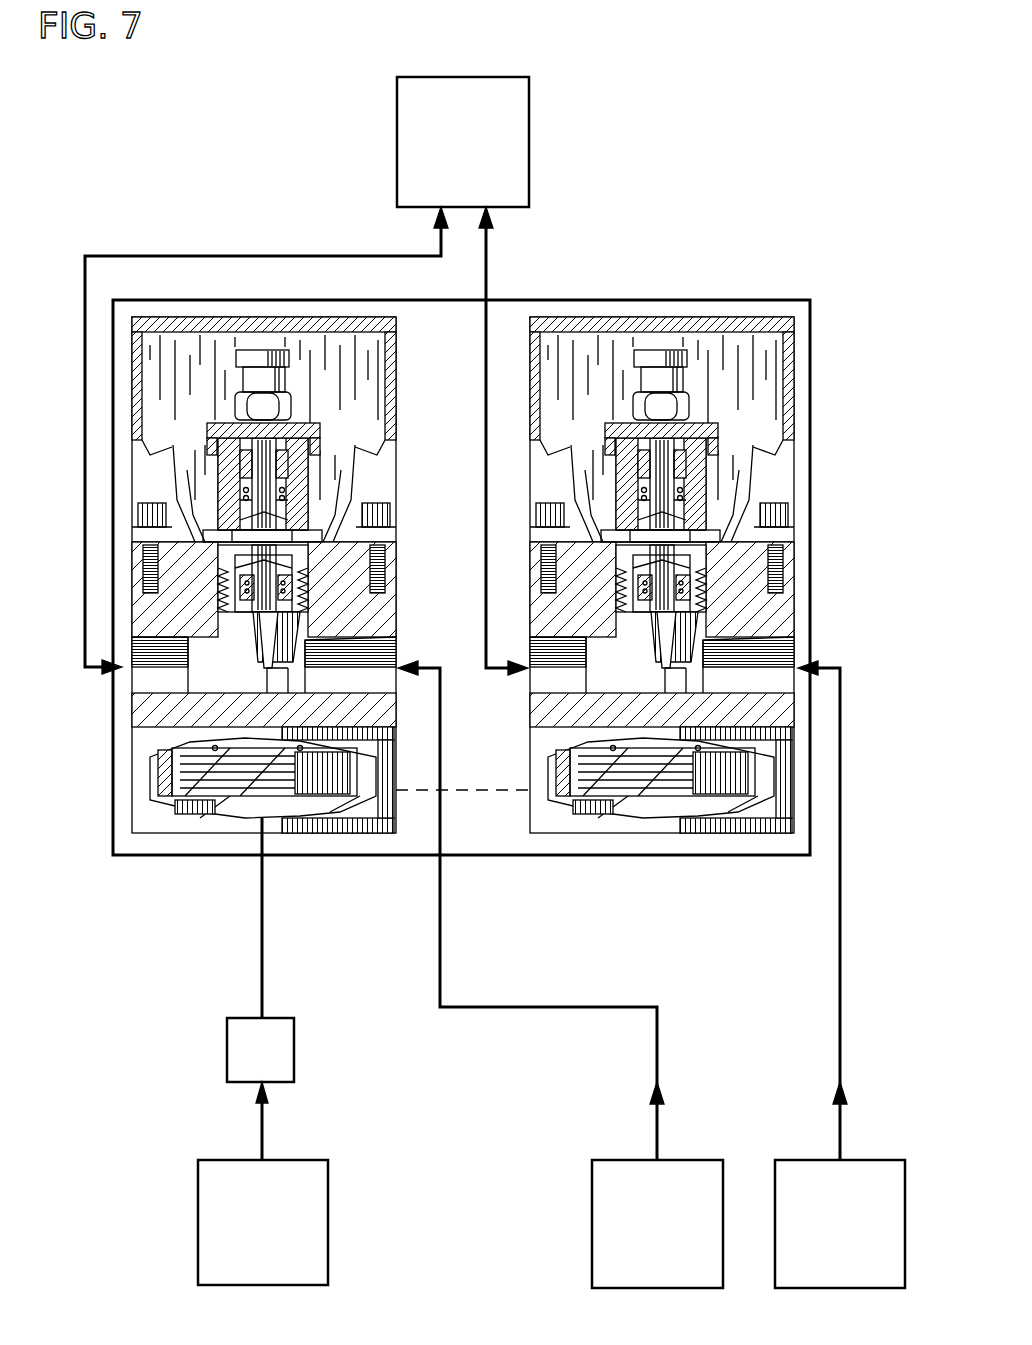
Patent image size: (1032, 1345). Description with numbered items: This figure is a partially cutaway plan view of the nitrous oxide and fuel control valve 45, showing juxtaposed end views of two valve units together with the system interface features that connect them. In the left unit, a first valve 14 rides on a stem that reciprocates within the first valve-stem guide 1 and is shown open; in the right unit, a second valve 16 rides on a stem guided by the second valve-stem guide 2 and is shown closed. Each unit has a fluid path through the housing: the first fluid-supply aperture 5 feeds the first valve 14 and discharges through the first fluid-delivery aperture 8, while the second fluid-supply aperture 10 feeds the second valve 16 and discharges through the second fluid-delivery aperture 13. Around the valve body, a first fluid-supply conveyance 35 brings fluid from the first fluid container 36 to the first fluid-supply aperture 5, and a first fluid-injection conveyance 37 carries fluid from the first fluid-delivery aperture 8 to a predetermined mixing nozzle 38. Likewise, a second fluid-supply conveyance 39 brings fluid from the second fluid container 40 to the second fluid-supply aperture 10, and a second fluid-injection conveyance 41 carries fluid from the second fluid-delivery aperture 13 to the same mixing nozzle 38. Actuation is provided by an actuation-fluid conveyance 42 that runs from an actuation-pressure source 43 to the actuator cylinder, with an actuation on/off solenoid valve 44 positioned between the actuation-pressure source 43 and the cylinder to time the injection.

The first valve-stem guide 1 is at (313, 476).
The second valve-stem guide 2 is at (705, 474).
The first fluid-supply aperture 5 is at (325, 657).
The first fluid-delivery aperture 8 is at (168, 675).
The second fluid-supply aperture 10 is at (720, 660).
The second fluid-delivery aperture 13 is at (580, 693).
The first valve 14 is at (283, 588).
The second valve 16 is at (690, 574).
The first fluid-supply conveyance 35 is at (542, 1006).
The first fluid container 36 is at (657, 1224).
The first fluid-injection conveyance 37 is at (226, 256).
The mixing nozzle 38 is at (463, 142).
The second fluid-supply conveyance 39 is at (840, 972).
The second fluid container 40 is at (840, 1224).
The second fluid-injection conveyance 41 is at (488, 268).
The actuation-fluid conveyance 42 is at (262, 958).
The actuation-pressure source 43 is at (263, 1222).
The actuation on/off solenoid valve 44 is at (260, 1050).
The nitrous oxide and fuel control valve 45 is at (872, 42).